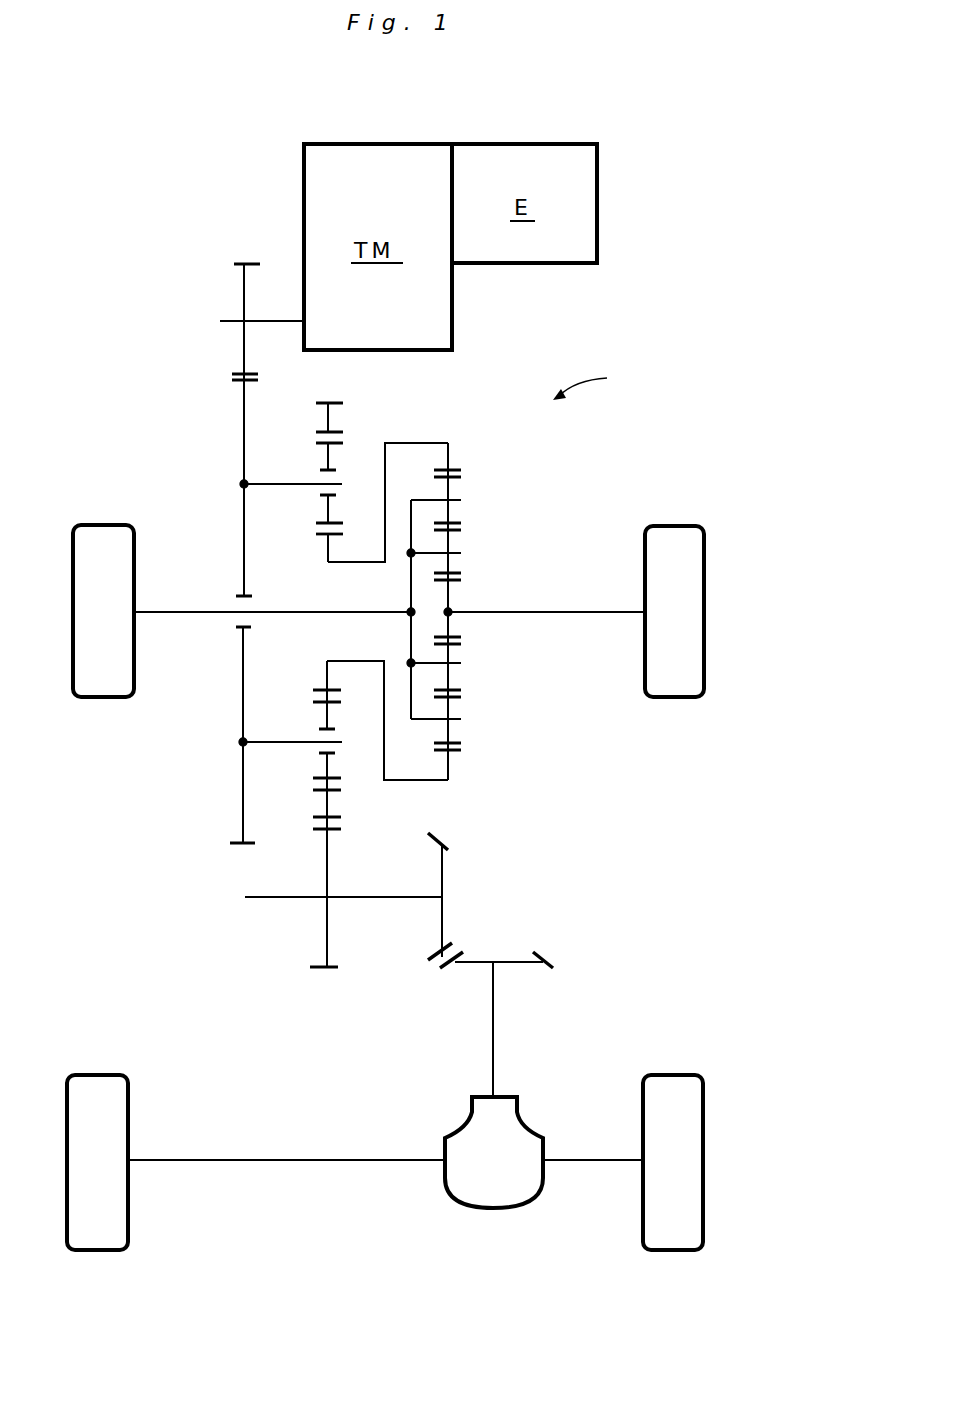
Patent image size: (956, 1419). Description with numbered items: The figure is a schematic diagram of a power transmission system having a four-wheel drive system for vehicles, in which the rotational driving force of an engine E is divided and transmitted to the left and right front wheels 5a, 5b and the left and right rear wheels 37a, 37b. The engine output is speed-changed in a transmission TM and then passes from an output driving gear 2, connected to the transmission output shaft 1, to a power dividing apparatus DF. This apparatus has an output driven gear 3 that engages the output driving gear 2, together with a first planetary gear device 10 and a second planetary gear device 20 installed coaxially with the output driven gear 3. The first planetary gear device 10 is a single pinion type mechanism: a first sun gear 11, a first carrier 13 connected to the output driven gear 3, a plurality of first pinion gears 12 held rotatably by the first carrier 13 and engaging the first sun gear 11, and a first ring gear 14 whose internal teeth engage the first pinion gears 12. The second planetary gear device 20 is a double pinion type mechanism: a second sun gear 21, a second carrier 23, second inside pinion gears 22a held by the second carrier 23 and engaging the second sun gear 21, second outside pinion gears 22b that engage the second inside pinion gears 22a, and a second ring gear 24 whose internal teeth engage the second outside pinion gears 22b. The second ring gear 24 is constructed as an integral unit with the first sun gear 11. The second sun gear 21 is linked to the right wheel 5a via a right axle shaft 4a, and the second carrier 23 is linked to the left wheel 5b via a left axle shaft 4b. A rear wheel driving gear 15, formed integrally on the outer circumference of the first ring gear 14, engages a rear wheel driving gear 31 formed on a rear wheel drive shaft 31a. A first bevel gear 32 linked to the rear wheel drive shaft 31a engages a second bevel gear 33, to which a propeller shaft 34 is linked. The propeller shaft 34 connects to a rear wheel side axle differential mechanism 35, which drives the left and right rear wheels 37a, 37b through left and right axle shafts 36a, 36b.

The transmission output shaft 1 is at (232, 321).
The output driving gear 2 is at (234, 262).
The output driven gear 3 is at (238, 846).
The right axle shaft 4a is at (550, 612).
The left axle shaft 4b is at (170, 612).
The right wheel 5a is at (674, 526).
The left wheel 5b is at (108, 525).
The first planetary gear device 10 is at (386, 394).
The first sun gear 11 is at (328, 558).
The first pinion gears 12 is at (320, 516).
The first carrier 13 is at (302, 484).
The first ring gear 14 is at (340, 432).
The rear wheel driving gear 15 is at (330, 402).
The second planetary gear device 20 is at (521, 467).
The second sun gear 21 is at (453, 585).
The second inside pinion gears 22a is at (453, 569).
The second outside pinion gears 22b is at (453, 520).
The second carrier 23 is at (407, 520).
The second ring gear 24 is at (453, 467).
The rear wheel driving gear 31 is at (318, 970).
The rear wheel drive shaft 31a is at (350, 897).
The first bevel gear 32 is at (447, 846).
The second bevel gear 33 is at (543, 955).
The propeller shaft 34 is at (494, 1035).
The rear wheel side axle differential mechanism 35 is at (484, 1205).
The right axle shaft 36a is at (565, 1160).
The left axle shaft 36b is at (275, 1160).
The right rear wheel 37a is at (672, 1075).
The left rear wheel 37b is at (103, 1075).